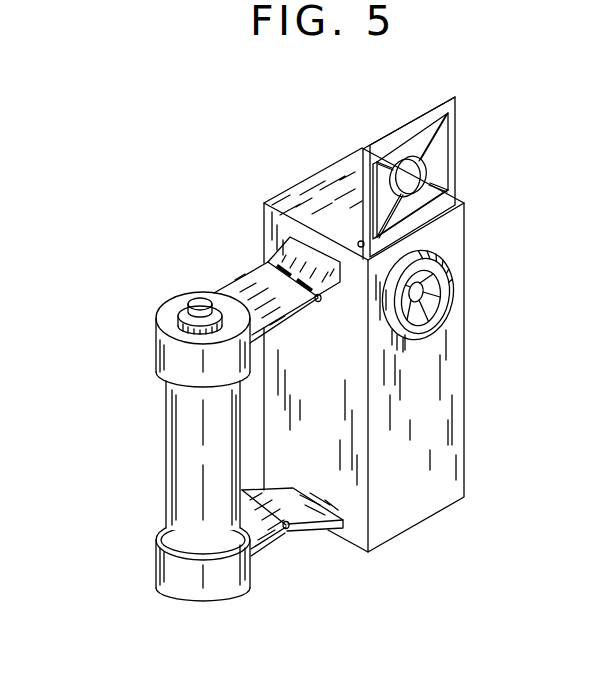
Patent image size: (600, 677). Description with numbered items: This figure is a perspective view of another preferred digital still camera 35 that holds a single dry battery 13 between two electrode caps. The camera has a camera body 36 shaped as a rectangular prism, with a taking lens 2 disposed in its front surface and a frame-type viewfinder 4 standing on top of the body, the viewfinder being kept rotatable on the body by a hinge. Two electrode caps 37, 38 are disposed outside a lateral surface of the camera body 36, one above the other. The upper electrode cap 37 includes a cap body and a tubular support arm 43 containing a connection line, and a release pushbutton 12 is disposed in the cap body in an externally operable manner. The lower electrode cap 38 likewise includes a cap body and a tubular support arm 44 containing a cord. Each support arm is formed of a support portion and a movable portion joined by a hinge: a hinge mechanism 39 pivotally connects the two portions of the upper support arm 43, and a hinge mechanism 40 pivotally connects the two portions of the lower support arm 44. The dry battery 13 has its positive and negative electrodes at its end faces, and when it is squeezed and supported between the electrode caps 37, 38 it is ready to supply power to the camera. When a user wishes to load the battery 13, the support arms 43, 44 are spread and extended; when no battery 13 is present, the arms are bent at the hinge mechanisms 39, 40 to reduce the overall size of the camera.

The taking lens 2 is at (452, 300).
The frame-type viewfinder 4 is at (463, 150).
The release pushbutton 12 is at (198, 301).
The dry battery 13 is at (178, 441).
The digital still camera 35 is at (448, 529).
The camera body 36 is at (452, 400).
The electrode cap 37 is at (127, 311).
The electrode cap 38 is at (127, 566).
The hinge mechanism 39 is at (320, 302).
The hinge mechanism 40 is at (287, 521).
The tubular support arm 43 is at (255, 263).
The tubular support arm 44 is at (316, 546).